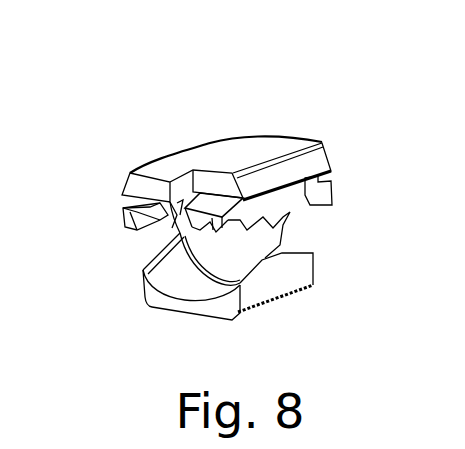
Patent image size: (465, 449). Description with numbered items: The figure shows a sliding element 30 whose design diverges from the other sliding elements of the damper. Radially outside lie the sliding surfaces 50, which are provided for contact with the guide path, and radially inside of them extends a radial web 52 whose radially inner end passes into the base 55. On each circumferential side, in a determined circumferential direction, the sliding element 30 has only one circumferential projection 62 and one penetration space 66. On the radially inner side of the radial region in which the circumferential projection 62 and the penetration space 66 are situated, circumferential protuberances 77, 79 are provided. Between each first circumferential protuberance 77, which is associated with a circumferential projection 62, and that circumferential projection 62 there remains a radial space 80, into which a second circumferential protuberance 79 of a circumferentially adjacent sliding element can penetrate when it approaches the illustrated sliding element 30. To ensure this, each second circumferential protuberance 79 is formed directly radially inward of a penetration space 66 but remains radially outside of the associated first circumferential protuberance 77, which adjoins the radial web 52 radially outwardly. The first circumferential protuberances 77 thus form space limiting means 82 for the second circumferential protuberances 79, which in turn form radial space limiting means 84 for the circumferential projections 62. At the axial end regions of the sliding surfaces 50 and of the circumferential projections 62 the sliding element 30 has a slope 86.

The sliding element 30 is at (176, 160).
The sliding surface 50 is at (221, 153).
The radial web 52 is at (250, 222).
The base 55 is at (193, 292).
The circumferential projection 62 is at (150, 180).
The penetration space 66 is at (205, 170).
The first circumferential protuberance 77 is at (125, 222).
The second circumferential protuberance 79 is at (212, 206).
The radial space 80 is at (162, 220).
The space limiting means 82 is at (126, 208).
The radial space limiting means 84 is at (215, 204).
The slope 86 is at (262, 160).